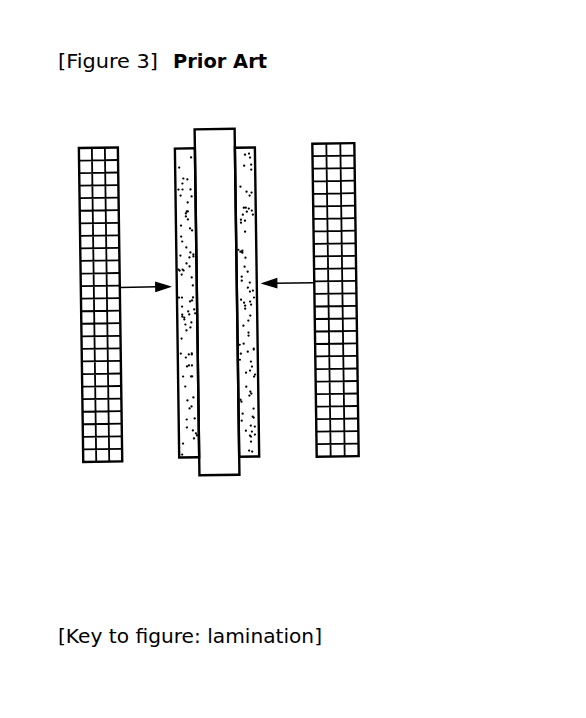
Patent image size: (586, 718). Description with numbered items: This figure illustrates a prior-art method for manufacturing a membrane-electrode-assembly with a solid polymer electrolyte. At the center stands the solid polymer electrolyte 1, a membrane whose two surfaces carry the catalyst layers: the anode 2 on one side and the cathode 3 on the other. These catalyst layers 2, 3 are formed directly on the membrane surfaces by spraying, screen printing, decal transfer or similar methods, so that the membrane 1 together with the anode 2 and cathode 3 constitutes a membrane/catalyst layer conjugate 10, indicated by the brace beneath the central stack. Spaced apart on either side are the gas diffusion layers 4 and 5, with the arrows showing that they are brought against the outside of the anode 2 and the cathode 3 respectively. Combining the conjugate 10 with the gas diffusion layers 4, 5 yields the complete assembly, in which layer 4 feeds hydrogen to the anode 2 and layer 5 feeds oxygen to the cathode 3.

The solid polymer electrolyte 1 is at (220, 467).
The anode 2 is at (191, 463).
The cathode 3 is at (250, 345).
The gas diffusion layer 4 is at (101, 448).
The gas diffusion layer 5 is at (335, 450).
The membrane/catalyst layer conjugate 10 is at (222, 360).